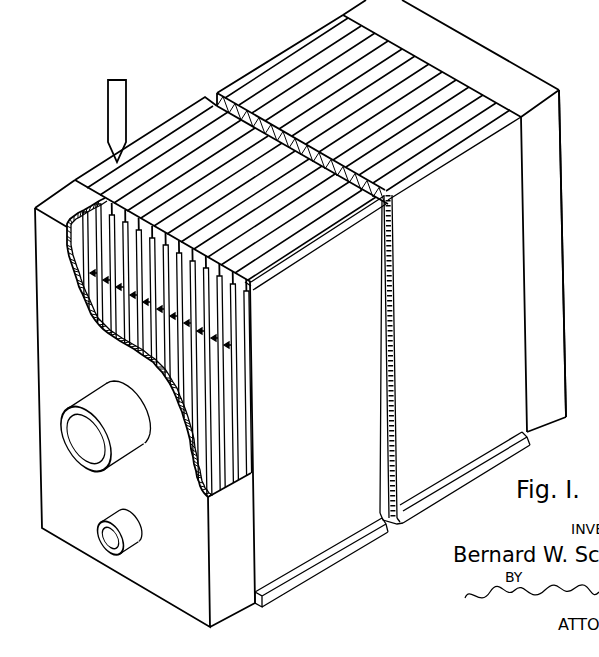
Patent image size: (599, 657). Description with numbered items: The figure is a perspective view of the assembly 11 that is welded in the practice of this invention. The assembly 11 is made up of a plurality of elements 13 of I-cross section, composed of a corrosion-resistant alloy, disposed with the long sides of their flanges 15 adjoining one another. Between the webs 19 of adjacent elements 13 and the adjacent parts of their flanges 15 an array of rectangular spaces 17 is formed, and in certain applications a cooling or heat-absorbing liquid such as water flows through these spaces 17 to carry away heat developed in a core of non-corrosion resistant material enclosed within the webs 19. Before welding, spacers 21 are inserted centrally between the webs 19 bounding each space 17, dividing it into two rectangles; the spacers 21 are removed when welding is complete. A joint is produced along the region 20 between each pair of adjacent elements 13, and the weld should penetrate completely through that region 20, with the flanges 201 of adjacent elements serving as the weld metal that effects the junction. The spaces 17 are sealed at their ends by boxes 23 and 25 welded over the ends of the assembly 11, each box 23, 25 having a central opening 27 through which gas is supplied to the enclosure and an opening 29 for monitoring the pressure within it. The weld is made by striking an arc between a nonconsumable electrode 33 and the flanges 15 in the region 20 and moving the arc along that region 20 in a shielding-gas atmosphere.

The assembly 11 is at (476, 515).
The element 13 is at (76, 216).
The flange 15 is at (192, 132).
The rectangular space 17 is at (213, 317).
The web 19 is at (220, 342).
The region 20 is at (298, 52).
The spacer 21 is at (233, 392).
The flange 201 is at (248, 285).
The box 23 is at (163, 577).
The box 25 is at (561, 239).
The central opening 27 is at (100, 399).
The opening 29 is at (138, 538).
The nonconsumable electrode 33 is at (127, 106).